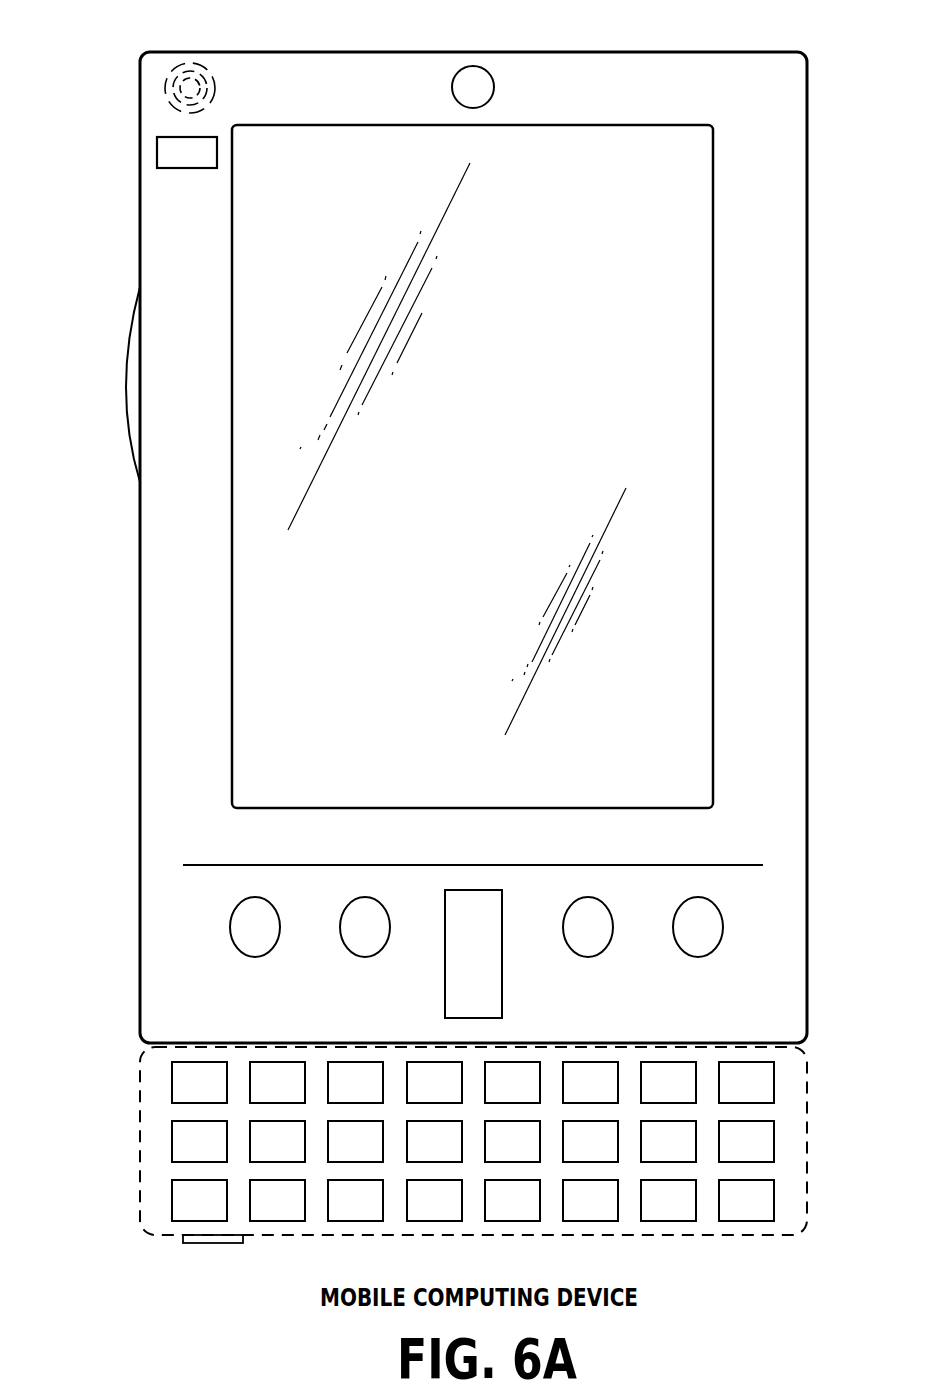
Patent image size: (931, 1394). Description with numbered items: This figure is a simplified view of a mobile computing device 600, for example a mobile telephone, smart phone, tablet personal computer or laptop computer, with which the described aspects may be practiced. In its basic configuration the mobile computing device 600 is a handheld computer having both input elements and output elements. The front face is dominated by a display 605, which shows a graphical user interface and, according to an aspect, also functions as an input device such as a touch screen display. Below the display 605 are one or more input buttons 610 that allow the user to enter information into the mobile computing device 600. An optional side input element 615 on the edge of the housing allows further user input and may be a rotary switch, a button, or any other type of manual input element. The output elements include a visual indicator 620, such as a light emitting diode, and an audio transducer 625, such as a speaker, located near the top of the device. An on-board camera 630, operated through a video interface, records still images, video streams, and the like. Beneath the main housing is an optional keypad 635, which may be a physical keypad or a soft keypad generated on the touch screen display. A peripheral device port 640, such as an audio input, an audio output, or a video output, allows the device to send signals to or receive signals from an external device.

The mobile computing device 600 is at (770, 50).
The display 605 is at (257, 643).
The input buttons 610 is at (257, 957).
The side input element 615 is at (118, 387).
The visual indicator 620 is at (157, 153).
The audio transducer 625 is at (158, 90).
The on-board camera 630 is at (473, 66).
The keypad 635 is at (152, 1142).
The peripheral device port 640 is at (190, 1244).